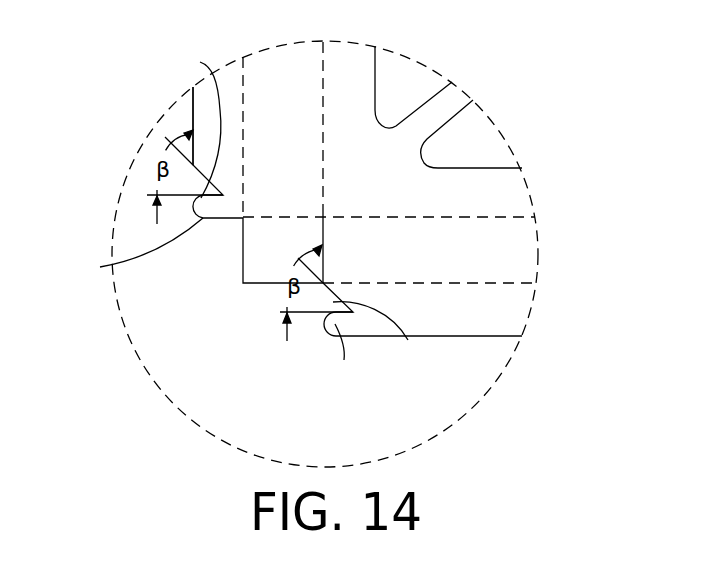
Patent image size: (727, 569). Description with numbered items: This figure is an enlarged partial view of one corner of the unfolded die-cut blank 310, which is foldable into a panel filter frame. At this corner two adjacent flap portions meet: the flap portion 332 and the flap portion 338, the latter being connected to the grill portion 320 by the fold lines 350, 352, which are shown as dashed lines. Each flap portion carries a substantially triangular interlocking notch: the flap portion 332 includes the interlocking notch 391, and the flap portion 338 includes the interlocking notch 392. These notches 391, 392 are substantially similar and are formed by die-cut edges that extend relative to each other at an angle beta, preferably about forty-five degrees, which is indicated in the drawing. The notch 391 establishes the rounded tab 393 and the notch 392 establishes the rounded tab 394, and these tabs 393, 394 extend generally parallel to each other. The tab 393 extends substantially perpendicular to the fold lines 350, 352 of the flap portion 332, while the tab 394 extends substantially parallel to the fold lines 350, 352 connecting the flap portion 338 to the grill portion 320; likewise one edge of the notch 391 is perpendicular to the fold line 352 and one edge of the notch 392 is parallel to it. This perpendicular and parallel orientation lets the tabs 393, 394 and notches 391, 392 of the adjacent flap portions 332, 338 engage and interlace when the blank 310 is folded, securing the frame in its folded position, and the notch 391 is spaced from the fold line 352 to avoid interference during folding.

The die-cut blank 310 is at (179, 361).
The grill portion 320 is at (453, 103).
The flap portion 332 is at (200, 112).
The flap portion 338 is at (489, 322).
The fold line 350 is at (323, 87).
The fold line 352 is at (243, 86).
The interlocking notch 391 is at (200, 62).
The interlocking notch 392 is at (408, 340).
The tab 393 is at (100, 267).
The tab 394 is at (344, 360).